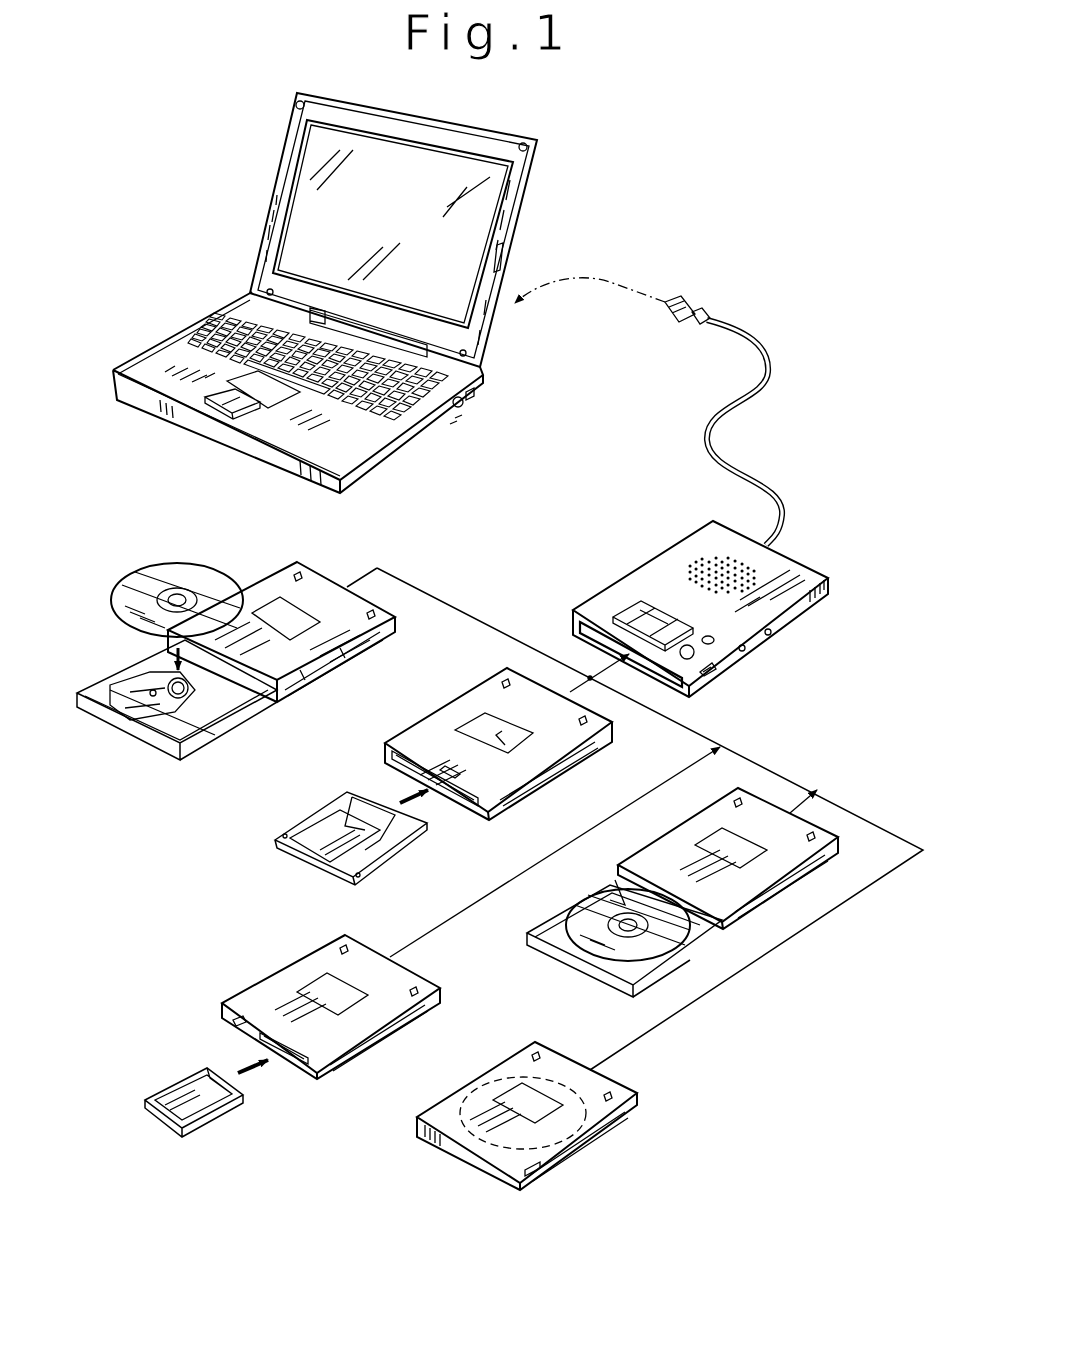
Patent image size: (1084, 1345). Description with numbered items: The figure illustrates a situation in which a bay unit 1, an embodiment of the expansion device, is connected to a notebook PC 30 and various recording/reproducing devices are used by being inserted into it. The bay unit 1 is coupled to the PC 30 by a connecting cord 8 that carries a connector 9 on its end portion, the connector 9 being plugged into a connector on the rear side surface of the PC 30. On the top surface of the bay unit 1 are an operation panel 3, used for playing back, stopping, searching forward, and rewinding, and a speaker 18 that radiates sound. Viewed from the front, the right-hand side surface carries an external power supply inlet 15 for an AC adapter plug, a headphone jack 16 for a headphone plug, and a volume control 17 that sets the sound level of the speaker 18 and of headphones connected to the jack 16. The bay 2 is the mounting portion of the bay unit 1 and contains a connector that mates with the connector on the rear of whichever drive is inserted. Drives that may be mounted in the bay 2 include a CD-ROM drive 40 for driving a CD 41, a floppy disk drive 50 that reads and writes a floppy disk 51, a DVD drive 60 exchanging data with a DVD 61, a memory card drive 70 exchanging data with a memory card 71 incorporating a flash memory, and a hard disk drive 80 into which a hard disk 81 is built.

The bay unit 1 is at (648, 537).
The bay 2 is at (663, 675).
The operation panel 3 is at (630, 607).
The connecting cord 8 is at (737, 467).
The connector 9 is at (680, 303).
The external power supply inlet 15 is at (771, 632).
The headphone jack 16 is at (744, 649).
The volume control 17 is at (711, 673).
The speaker 18 is at (760, 570).
The notebook PC 30 is at (555, 195).
The CD-ROM drive 40 is at (258, 570).
The CD 41 is at (143, 580).
The floppy disk drive 50 is at (440, 697).
The floppy disk 51 is at (317, 833).
The DVD drive 60 is at (600, 872).
The DVD 61 is at (665, 940).
The memory card drive 70 is at (277, 953).
The memory card 71 is at (183, 1093).
The hard disk drive 80 is at (460, 1170).
The hard disk 81 is at (470, 1093).